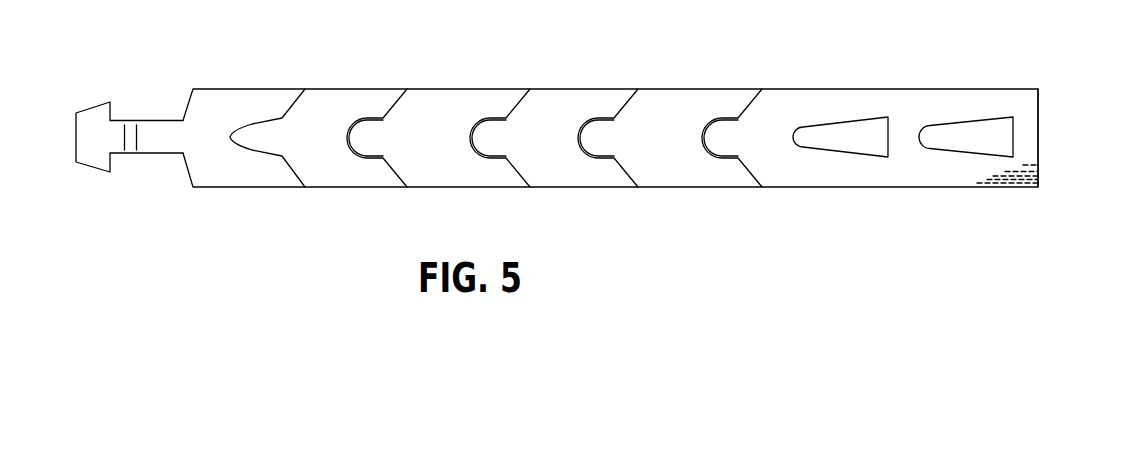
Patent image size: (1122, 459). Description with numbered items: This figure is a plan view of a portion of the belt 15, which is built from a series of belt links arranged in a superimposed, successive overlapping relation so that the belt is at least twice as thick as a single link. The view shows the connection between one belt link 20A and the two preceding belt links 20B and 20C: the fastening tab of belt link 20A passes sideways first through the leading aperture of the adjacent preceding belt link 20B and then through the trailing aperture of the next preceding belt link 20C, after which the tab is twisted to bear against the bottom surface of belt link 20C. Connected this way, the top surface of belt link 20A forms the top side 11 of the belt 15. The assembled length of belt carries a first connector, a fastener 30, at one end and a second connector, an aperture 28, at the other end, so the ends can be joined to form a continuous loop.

The top side 11 is at (655, 102).
The belt 15 is at (1048, 132).
The belt link 20A is at (570, 156).
The belt link 20B is at (458, 156).
The belt link 20C is at (338, 156).
The aperture 28 is at (831, 125).
The fastener 30 is at (90, 107).